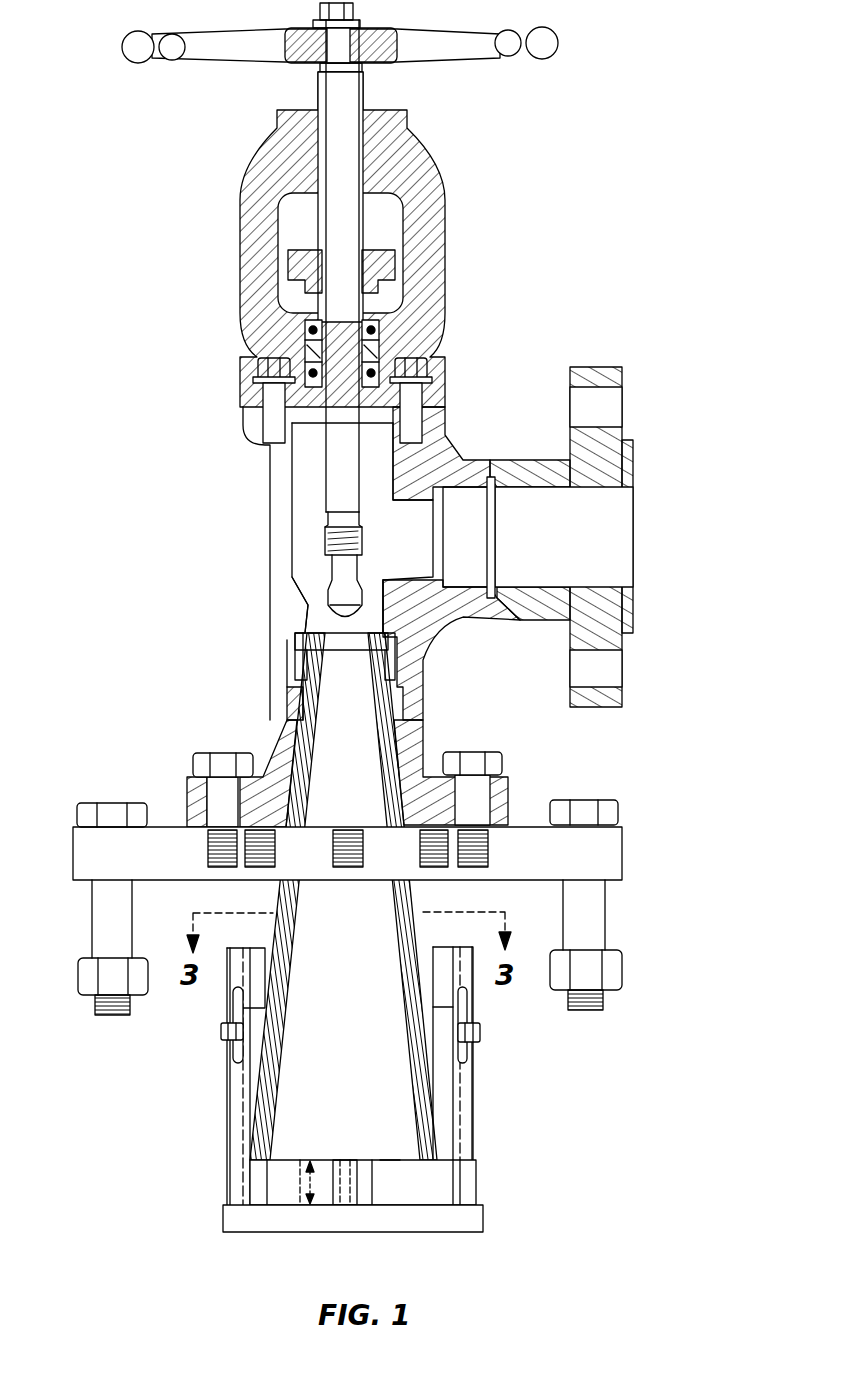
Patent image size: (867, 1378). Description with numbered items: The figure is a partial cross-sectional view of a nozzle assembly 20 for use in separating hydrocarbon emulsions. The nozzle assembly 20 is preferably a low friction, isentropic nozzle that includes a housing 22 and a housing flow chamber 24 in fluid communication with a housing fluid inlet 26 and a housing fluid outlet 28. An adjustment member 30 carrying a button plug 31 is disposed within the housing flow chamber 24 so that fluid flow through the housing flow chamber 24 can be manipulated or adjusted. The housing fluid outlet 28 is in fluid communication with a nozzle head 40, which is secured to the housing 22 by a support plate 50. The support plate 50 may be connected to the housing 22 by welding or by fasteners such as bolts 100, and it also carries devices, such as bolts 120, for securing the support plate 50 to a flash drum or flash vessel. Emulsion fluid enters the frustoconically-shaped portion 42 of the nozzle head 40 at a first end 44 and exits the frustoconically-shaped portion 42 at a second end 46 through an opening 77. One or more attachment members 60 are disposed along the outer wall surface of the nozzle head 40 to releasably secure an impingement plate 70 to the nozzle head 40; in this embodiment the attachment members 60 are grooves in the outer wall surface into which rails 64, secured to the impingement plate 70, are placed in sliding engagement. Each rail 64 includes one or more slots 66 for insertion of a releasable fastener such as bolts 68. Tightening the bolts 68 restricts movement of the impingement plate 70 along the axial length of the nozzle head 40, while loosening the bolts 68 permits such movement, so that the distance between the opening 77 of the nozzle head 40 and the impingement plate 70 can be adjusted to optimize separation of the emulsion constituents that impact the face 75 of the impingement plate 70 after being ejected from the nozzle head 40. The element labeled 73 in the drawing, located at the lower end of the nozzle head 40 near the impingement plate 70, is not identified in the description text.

The nozzle assembly 20 is at (660, 138).
The housing 22 is at (437, 415).
The housing flow chamber 24 is at (378, 470).
The housing fluid inlet 26 is at (633, 538).
The housing fluid outlet 28 is at (318, 632).
The adjustment member 30 is at (333, 487).
The button plug 31 is at (337, 588).
The nozzle head 40 is at (295, 680).
The frustoconically-shaped portion 42 is at (327, 750).
The first end 44 is at (335, 638).
The second end 46 is at (322, 1160).
The support plate 50 is at (615, 846).
The attachment members 60 is at (455, 1127).
The rails 64 is at (462, 1092).
The slots 66 is at (465, 1052).
The bolts 68 is at (480, 1030).
The impingement plate 70 is at (233, 1220).
The bottom block 73 is at (430, 1156).
The face 75 is at (300, 1203).
The opening 77 is at (392, 1165).
The bolts 100 is at (500, 762).
The bolts 120 is at (590, 930).